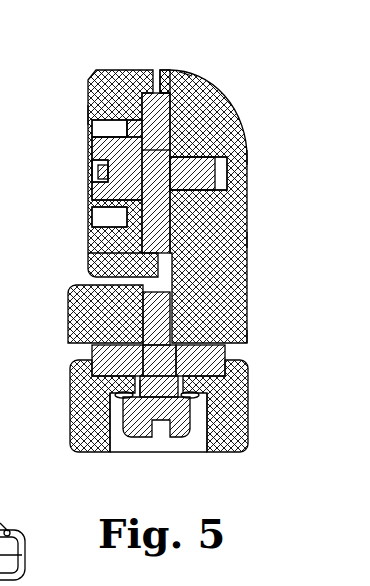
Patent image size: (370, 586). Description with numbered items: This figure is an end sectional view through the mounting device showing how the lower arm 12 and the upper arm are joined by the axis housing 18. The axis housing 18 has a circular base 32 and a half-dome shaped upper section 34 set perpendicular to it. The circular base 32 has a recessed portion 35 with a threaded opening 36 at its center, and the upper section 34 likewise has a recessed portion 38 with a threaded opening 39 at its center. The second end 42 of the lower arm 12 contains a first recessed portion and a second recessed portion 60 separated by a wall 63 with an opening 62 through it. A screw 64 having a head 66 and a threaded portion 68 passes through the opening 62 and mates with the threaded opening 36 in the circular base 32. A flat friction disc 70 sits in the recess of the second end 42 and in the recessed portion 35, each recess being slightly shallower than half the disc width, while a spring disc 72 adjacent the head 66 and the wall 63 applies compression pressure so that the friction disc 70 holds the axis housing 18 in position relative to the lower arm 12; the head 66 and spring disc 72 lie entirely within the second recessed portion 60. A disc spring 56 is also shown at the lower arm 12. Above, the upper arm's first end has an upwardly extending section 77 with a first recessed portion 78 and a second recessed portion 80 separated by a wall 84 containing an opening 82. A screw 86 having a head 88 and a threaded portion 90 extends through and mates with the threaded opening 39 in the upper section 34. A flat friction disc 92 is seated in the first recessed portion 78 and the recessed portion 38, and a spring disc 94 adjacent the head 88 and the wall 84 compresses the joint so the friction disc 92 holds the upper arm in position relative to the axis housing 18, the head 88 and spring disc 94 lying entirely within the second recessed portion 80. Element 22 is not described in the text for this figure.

The lower arm 12 is at (248, 410).
The axis housing 18 is at (247, 240).
The adjacent member 22 is at (9, 532).
The circular base 32 is at (249, 340).
The upper section 34 is at (247, 155).
The recessed portion 35 is at (226, 354).
The threaded opening 36 is at (173, 302).
The recessed portion 38 is at (163, 92).
The threaded opening 39 is at (220, 135).
The second end 42 is at (234, 440).
The disc spring 56 is at (90, 362).
The second recessed portion 60 is at (110, 440).
The opening 62 is at (137, 380).
The wall 63 is at (137, 379).
The screw 64 is at (140, 437).
The head 66 is at (192, 437).
The threaded portion 68 is at (142, 320).
The friction disc 70 is at (100, 355).
The spring disc 72 is at (112, 397).
The extending section 77 is at (104, 70).
The first recessed portion 78 is at (140, 253).
The second recessed portion 80 is at (108, 227).
The opening 82 is at (115, 203).
The wall 84 is at (138, 127).
The screw 86 is at (100, 148).
The head 88 is at (103, 130).
The threaded portion 90 is at (205, 188).
The friction disc 92 is at (188, 85).
The spring disc 94 is at (88, 117).